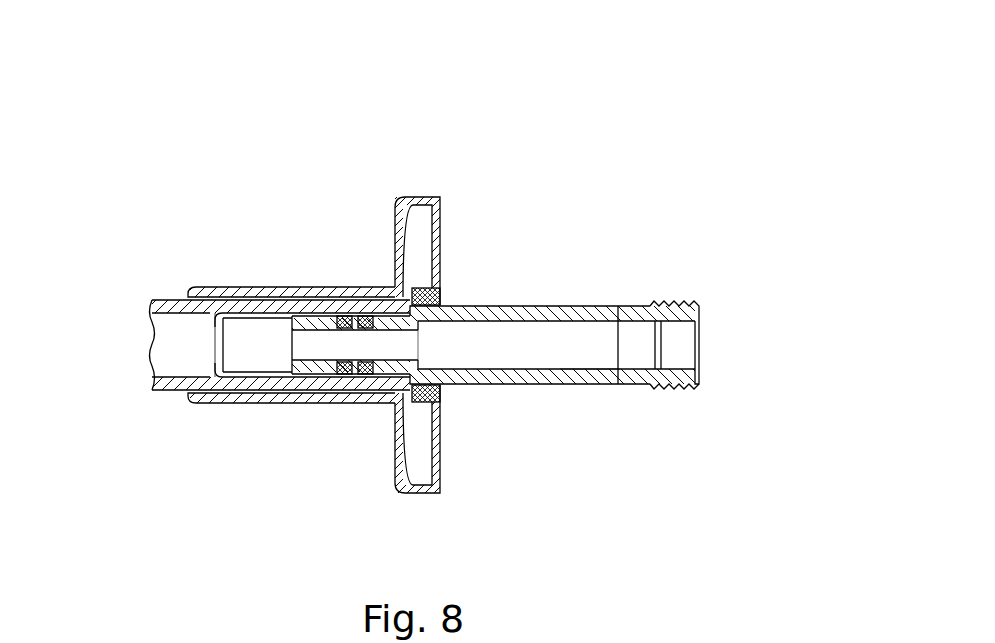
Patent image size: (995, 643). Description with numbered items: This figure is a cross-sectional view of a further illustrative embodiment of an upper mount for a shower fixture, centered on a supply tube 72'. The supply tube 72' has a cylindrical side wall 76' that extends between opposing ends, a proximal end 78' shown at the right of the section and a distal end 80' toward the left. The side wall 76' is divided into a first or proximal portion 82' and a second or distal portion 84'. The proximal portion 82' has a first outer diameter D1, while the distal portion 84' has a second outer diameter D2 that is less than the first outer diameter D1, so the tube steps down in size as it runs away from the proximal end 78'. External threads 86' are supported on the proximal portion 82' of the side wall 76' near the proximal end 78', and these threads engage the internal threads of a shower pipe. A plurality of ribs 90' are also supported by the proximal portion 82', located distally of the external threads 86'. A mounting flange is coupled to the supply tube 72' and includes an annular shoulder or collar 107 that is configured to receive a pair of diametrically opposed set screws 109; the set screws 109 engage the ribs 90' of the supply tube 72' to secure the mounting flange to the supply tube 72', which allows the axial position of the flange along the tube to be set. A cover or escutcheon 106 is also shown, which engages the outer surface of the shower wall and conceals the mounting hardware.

The supply tube 72' is at (493, 276).
The cylindrical side wall 76' is at (626, 276).
The proximal end 78' is at (783, 283).
The distal end 80' is at (273, 321).
The proximal portion 82' is at (607, 435).
The distal portion 84' is at (280, 377).
The external threads 86' is at (688, 291).
The ribs 90' is at (476, 417).
The cover 106 is at (416, 197).
The annular shoulder or collar 107 is at (397, 398).
The set screws 109 is at (424, 290).
The first outer diameter D1 is at (556, 440).
The second outer diameter D2 is at (307, 432).